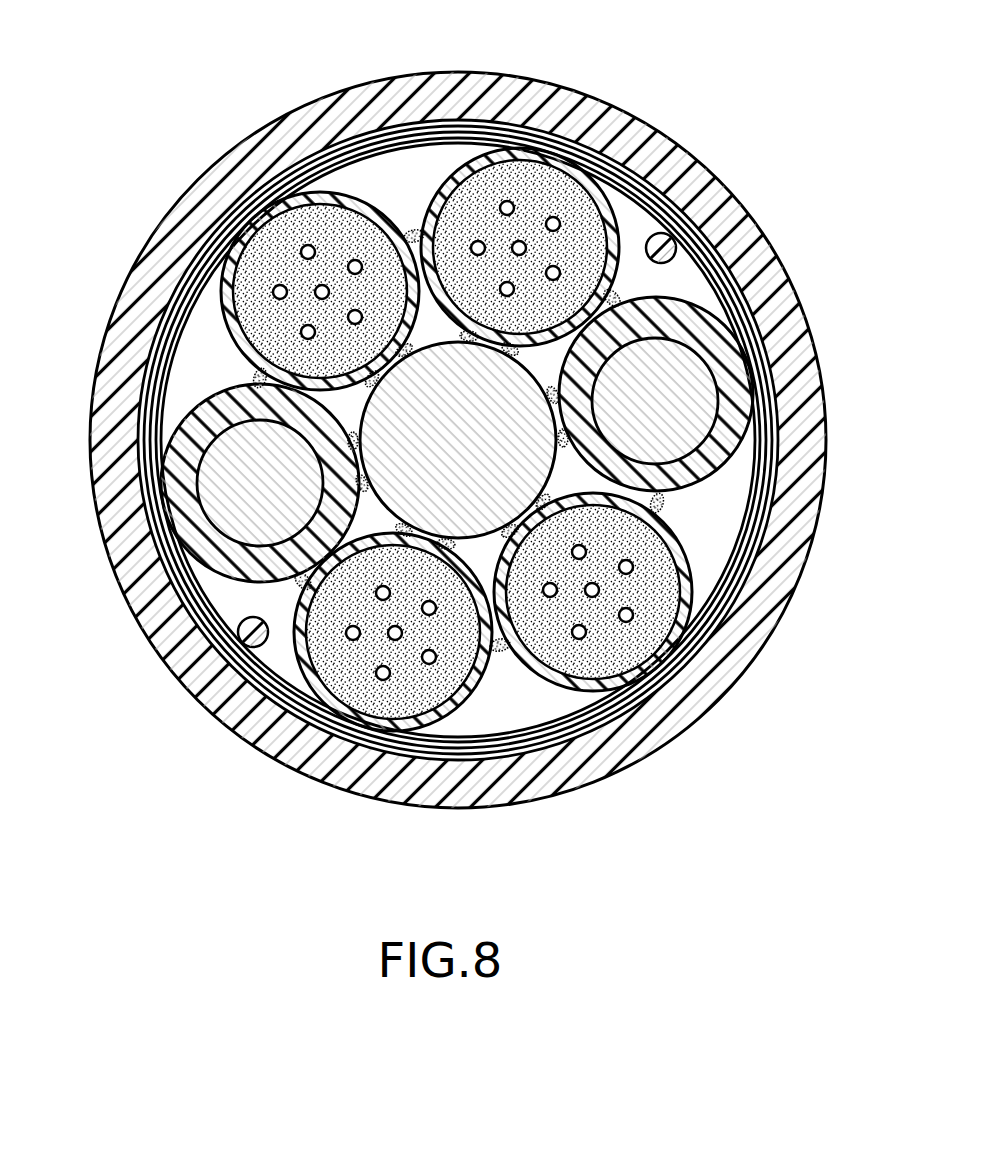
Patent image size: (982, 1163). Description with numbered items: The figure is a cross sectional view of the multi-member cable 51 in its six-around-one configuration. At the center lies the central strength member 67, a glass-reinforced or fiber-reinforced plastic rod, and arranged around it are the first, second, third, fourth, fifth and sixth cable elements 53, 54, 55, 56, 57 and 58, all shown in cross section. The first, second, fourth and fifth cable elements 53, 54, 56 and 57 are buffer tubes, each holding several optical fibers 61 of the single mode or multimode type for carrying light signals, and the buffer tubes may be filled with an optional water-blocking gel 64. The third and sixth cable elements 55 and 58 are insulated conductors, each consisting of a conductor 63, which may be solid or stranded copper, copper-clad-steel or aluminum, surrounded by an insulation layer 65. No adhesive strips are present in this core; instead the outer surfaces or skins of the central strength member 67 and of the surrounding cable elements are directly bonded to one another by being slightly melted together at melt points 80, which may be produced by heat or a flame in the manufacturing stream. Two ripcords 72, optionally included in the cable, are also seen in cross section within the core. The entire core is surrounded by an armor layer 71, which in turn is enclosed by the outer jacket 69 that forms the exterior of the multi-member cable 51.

The multi-member cable 51 is at (800, 182).
The first cable element 53 is at (483, 162).
The second cable element 54 is at (265, 215).
The third cable element 55 is at (215, 418).
The fourth cable element 56 is at (452, 725).
The fifth cable element 57 is at (680, 620).
The sixth cable element 58 is at (790, 452).
The optical fibers 61 is at (280, 292).
The conductors 63 is at (220, 490).
The gel 64 is at (345, 215).
The insulation layer 65 is at (205, 550).
The central strength member 67 is at (444, 454).
The outer jacket 69 is at (175, 640).
The armor layer 71 is at (432, 130).
The ripcords 72 is at (662, 245).
The melt points 80 is at (415, 234).